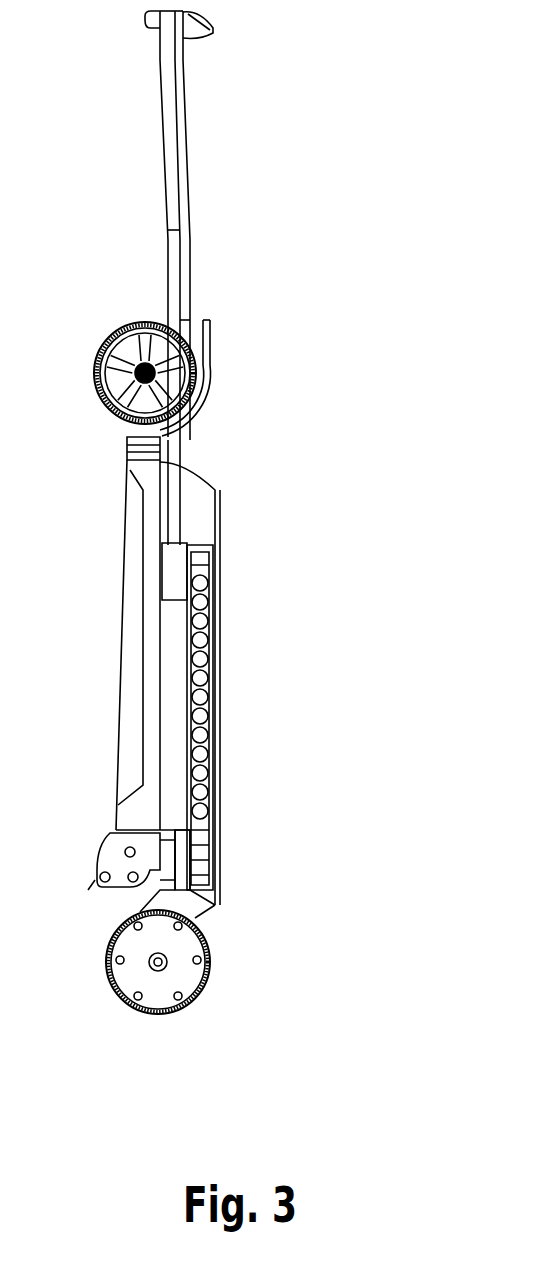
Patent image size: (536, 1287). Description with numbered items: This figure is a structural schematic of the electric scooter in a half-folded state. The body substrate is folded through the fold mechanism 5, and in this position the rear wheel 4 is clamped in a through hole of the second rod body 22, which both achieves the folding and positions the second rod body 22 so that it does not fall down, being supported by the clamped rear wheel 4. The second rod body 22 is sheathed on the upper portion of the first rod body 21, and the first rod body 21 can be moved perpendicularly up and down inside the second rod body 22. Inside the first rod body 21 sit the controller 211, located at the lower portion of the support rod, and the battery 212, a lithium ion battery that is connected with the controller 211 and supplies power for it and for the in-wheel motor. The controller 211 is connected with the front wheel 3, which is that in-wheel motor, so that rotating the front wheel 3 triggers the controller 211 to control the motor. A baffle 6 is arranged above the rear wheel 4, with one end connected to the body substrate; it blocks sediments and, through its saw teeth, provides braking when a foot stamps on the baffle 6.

The handle 22 is at (187, 145).
The front wheel 4 is at (155, 323).
The wheel guard 6 is at (212, 377).
The body 21 is at (216, 527).
The chain column 212 is at (202, 655).
The bracket 5 is at (150, 853).
The lower body portion 211 is at (213, 865).
The rear wheel 3 is at (213, 965).